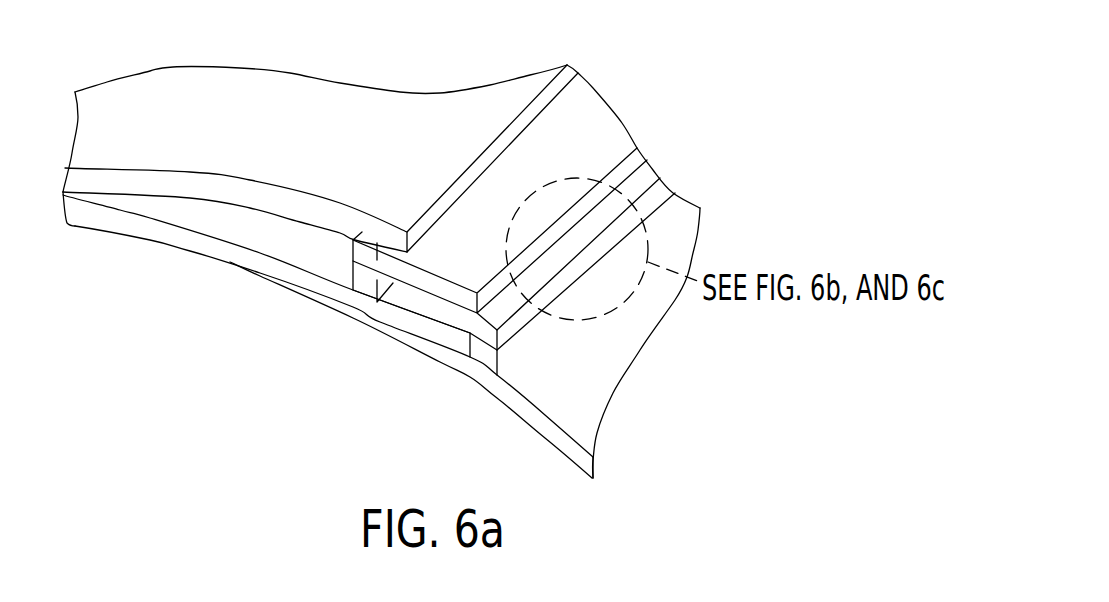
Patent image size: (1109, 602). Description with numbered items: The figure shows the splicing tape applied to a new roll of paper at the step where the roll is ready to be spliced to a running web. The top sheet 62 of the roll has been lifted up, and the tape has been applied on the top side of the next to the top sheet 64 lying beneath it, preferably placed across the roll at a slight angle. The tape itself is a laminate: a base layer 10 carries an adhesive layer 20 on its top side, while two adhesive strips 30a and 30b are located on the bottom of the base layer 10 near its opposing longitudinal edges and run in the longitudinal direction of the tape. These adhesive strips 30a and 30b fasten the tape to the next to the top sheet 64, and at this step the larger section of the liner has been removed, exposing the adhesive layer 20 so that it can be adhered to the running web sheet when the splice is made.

The top sheet 62 is at (308, 95).
The next to the top sheet 64 is at (175, 240).
The adhesive layer 20 is at (610, 125).
The base layer 10 is at (650, 172).
The adhesive strip 30a is at (362, 288).
The adhesive strip 30b is at (675, 197).